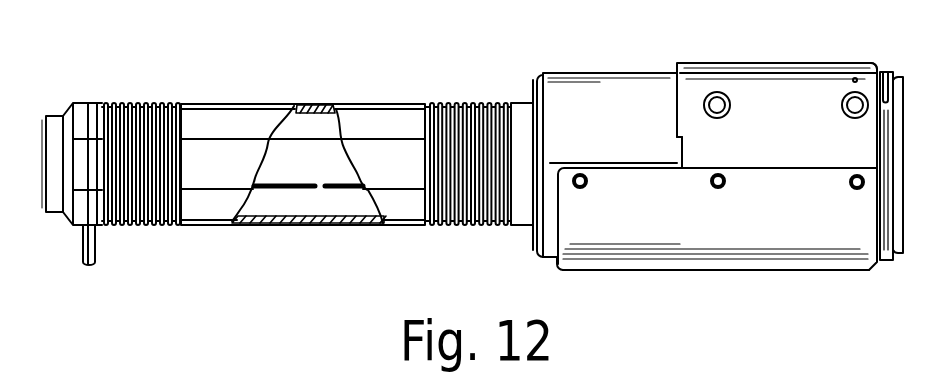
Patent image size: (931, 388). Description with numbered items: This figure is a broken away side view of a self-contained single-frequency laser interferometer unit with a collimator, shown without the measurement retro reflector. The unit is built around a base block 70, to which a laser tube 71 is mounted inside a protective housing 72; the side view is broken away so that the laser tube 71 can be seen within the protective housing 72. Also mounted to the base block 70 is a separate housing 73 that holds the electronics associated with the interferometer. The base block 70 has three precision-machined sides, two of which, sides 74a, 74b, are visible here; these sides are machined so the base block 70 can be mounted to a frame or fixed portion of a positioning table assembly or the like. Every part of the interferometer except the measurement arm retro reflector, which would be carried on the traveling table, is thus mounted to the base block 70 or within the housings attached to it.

The base block 70 is at (555, 263).
The laser tube 71 is at (285, 160).
The protective housing 72 is at (309, 104).
The housing 73 is at (772, 230).
The side 74a is at (800, 153).
The side 74b is at (777, 61).